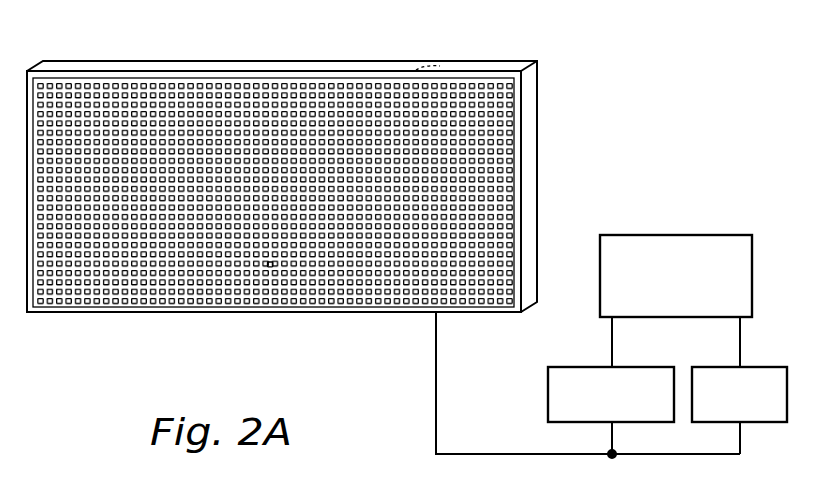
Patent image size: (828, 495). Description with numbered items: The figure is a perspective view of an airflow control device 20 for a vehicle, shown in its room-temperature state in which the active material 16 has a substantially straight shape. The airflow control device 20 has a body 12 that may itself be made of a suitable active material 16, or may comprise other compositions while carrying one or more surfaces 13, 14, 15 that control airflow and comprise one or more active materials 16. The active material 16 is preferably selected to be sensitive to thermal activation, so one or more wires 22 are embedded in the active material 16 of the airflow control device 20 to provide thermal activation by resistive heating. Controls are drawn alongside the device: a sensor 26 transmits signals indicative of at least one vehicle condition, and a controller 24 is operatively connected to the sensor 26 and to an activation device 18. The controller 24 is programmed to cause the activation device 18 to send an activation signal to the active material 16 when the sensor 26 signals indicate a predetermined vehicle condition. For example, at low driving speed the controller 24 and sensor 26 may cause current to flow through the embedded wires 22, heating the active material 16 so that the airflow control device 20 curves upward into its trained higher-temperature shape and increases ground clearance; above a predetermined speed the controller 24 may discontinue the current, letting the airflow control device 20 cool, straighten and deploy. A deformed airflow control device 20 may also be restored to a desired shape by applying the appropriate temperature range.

The body 12 is at (537, 150).
The surface 13 is at (104, 71).
The surface 14 is at (437, 207).
The surface 15 is at (429, 70).
The active material 16 is at (157, 312).
The activation device 18 is at (584, 366).
The airflow control device 20 is at (594, 93).
The wires 22 is at (270, 267).
The controller 24 is at (669, 235).
The sensor 26 is at (719, 366).